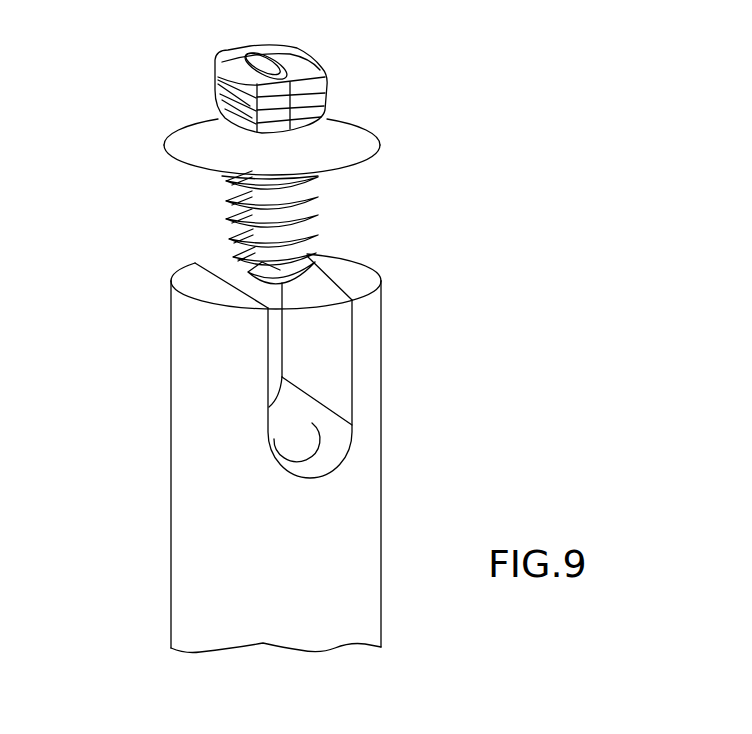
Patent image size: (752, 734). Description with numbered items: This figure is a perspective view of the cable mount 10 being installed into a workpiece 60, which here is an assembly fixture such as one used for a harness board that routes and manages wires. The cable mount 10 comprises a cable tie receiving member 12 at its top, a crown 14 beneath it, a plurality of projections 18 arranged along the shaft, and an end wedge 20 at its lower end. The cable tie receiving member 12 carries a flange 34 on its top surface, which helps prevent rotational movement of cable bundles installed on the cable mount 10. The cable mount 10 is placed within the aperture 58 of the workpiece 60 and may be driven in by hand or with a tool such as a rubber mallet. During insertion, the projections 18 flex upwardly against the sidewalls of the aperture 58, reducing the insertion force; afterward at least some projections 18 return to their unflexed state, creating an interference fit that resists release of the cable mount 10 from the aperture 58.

The cable mount 10 is at (356, 44).
The cable tie receiving member 12 is at (327, 85).
The crown 14 is at (353, 143).
The plurality of projections 18 is at (348, 209).
The end wedge 20 is at (282, 285).
The flange 34 is at (228, 52).
The aperture 58 is at (270, 438).
The workpiece 60 is at (382, 489).